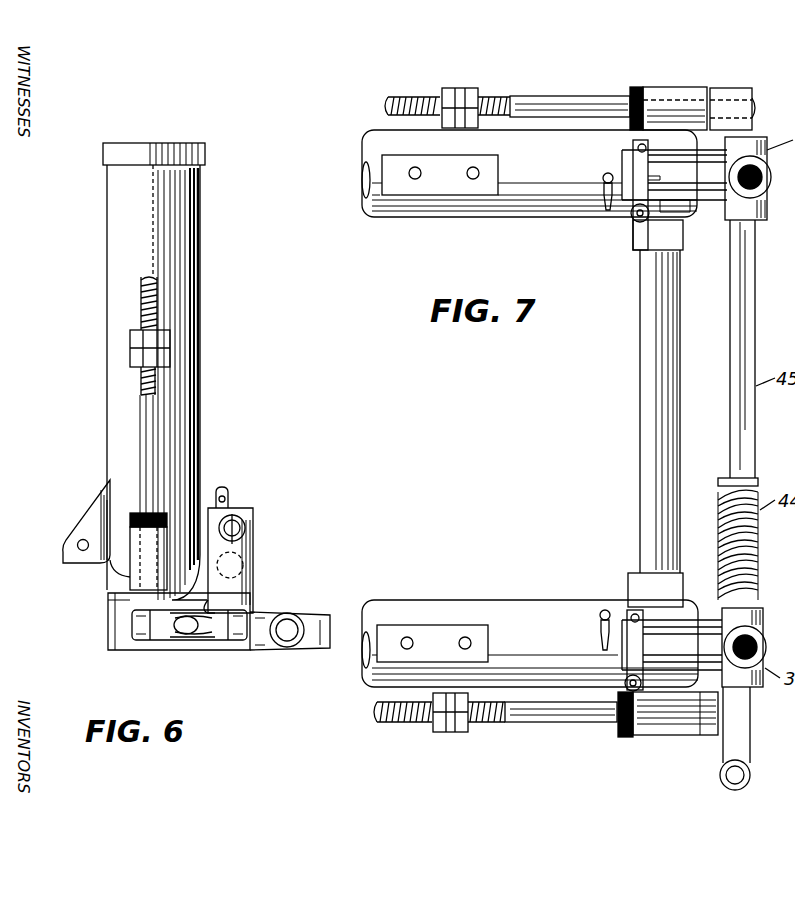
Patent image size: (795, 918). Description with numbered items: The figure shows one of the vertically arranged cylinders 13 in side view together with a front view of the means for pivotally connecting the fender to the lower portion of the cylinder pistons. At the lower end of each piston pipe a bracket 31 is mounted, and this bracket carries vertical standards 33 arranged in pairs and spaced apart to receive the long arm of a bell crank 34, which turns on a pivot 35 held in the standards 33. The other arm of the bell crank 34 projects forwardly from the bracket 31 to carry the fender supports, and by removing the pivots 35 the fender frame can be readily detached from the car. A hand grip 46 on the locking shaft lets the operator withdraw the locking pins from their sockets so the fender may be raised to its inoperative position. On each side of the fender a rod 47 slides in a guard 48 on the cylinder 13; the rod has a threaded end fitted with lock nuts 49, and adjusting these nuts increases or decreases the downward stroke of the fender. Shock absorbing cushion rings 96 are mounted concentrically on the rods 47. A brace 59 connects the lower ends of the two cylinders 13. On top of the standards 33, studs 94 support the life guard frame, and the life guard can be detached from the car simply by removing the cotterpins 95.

In FIG. 6, the cylinder 13 is at (200, 218).
In FIG. 7, the cylinder 13 is at (430, 217).
In FIG. 6, the bracket 31 is at (177, 647).
In FIG. 7, the bracket 31 is at (740, 88).
In FIG. 6, the vertical standard 33 is at (253, 513).
In FIG. 7, the vertical standard 33 is at (643, 415).
In FIG. 6, the bell crank 34 is at (265, 612).
In FIG. 7, the bell crank 34 is at (674, 410).
In FIG. 6, the pivot 35 is at (246, 530).
In FIG. 7, the pivot 35 is at (638, 221).
In FIG. 6, the hand grip 46 is at (157, 637).
In FIG. 7, the hand grip 46 is at (752, 778).
In FIG. 6, the rod 47 is at (150, 440).
In FIG. 7, the rod 47 is at (528, 97).
In FIG. 6, the guard 48 is at (133, 570).
In FIG. 7, the guard 48 is at (655, 87).
In FIG. 6, the lock nut 49 is at (130, 338).
In FIG. 7, the lock nut 49 is at (466, 88).
In FIG. 7, the brace 59 is at (647, 420).
In FIG. 6, the stud 94 is at (223, 487).
In FIG. 7, the stud 94 is at (612, 198).
In FIG. 6, the cotterpin 95 is at (226, 500).
In FIG. 7, the cotterpin 95 is at (607, 173).
In FIG. 6, the shock absorbing cushion ring 96 is at (130, 513).
In FIG. 7, the shock absorbing cushion ring 96 is at (637, 87).